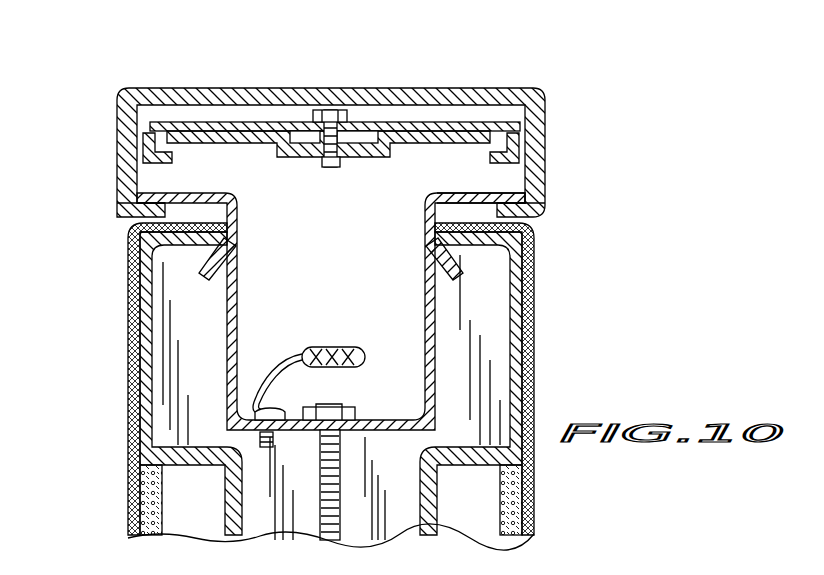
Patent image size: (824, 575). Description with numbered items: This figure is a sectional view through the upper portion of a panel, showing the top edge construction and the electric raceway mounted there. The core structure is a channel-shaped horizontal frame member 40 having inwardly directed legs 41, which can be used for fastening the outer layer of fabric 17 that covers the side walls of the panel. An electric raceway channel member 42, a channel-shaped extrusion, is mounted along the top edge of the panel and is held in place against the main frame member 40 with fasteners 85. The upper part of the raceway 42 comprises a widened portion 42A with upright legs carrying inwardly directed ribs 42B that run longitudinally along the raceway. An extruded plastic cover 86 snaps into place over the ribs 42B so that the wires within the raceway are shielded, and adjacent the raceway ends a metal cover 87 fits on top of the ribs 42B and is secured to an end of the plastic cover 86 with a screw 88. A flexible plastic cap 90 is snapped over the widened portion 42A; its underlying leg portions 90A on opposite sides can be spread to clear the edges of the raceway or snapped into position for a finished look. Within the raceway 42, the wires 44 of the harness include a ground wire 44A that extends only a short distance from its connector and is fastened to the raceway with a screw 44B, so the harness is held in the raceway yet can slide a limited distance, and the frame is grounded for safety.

The outer layer of fabric 17 is at (128, 357).
The horizontal frame member 40 is at (462, 447).
The inwardly directed legs 41 is at (186, 250).
The electric raceway channel member 42 is at (232, 243).
The widened portion 42A is at (530, 178).
The inwardly directed ribs 42B is at (150, 132).
The wires 44 is at (352, 349).
The ground wire 44A is at (268, 372).
The screw 44B is at (272, 409).
The fasteners 85 is at (345, 406).
The plastic cover 86 is at (225, 143).
The metal cover 87 is at (420, 122).
The screw 88 is at (340, 113).
The plastic cap 90 is at (497, 90).
The leg portions 90A is at (117, 212).